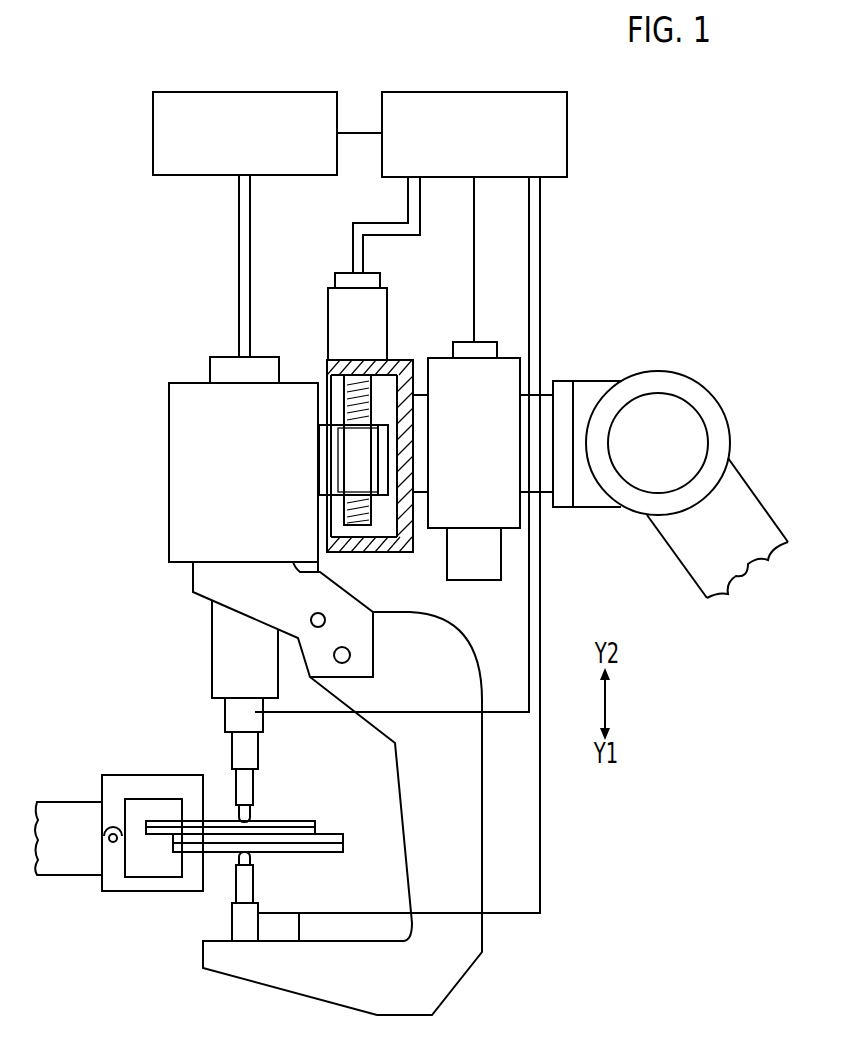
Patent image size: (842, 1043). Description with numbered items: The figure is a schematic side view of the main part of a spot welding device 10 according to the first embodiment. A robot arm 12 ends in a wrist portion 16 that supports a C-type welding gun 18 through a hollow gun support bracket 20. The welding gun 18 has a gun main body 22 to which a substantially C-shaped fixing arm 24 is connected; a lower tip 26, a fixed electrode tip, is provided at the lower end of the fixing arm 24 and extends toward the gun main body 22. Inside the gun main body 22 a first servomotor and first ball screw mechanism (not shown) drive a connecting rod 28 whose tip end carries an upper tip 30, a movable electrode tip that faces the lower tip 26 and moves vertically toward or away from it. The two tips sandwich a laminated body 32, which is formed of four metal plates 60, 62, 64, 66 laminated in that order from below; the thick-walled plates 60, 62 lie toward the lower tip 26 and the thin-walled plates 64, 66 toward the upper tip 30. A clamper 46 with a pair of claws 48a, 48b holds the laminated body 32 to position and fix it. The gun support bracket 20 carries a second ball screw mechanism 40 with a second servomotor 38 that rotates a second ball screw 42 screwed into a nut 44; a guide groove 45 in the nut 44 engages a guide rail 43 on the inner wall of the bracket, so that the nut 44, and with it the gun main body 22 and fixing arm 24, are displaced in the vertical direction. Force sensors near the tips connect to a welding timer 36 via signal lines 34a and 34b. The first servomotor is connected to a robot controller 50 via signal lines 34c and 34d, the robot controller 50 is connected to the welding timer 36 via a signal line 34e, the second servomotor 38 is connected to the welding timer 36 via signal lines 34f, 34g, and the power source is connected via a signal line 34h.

The spot welding device 10 is at (108, 76).
The arm 12 is at (701, 369).
The wrist portion 16 is at (476, 518).
The welding gun 18 is at (164, 375).
The gun support bracket 20 is at (399, 366).
The gun main body 22 is at (181, 480).
The fixing arm 24 is at (444, 976).
The lower tip 26 is at (251, 863).
The connecting rod 28 is at (220, 655).
The upper tip 30 is at (250, 812).
The laminated body 32 is at (322, 827).
The signal line 34a is at (448, 715).
The signal line 34b is at (357, 912).
The signal line 34c is at (238, 206).
The signal line 34d is at (251, 235).
The signal line 34e is at (348, 130).
The signal line 34f is at (407, 190).
The signal line 34g is at (422, 200).
The signal line 34h is at (475, 243).
The welding timer 36 is at (497, 91).
The second servomotor 38 is at (383, 302).
The second ball screw mechanism 40 is at (320, 322).
The second ball screw 42 is at (361, 522).
The guide rail 43 is at (345, 526).
The nut 44 is at (328, 480).
The guide groove 45 is at (340, 440).
The clamper 46 is at (60, 790).
The claw 48a is at (108, 886).
The claw 48b is at (122, 782).
The robot controller 50 is at (273, 91).
The metal plate 60 is at (320, 850).
The metal plate 62 is at (335, 838).
The metal plate 64 is at (155, 834).
The metal plate 66 is at (165, 821).